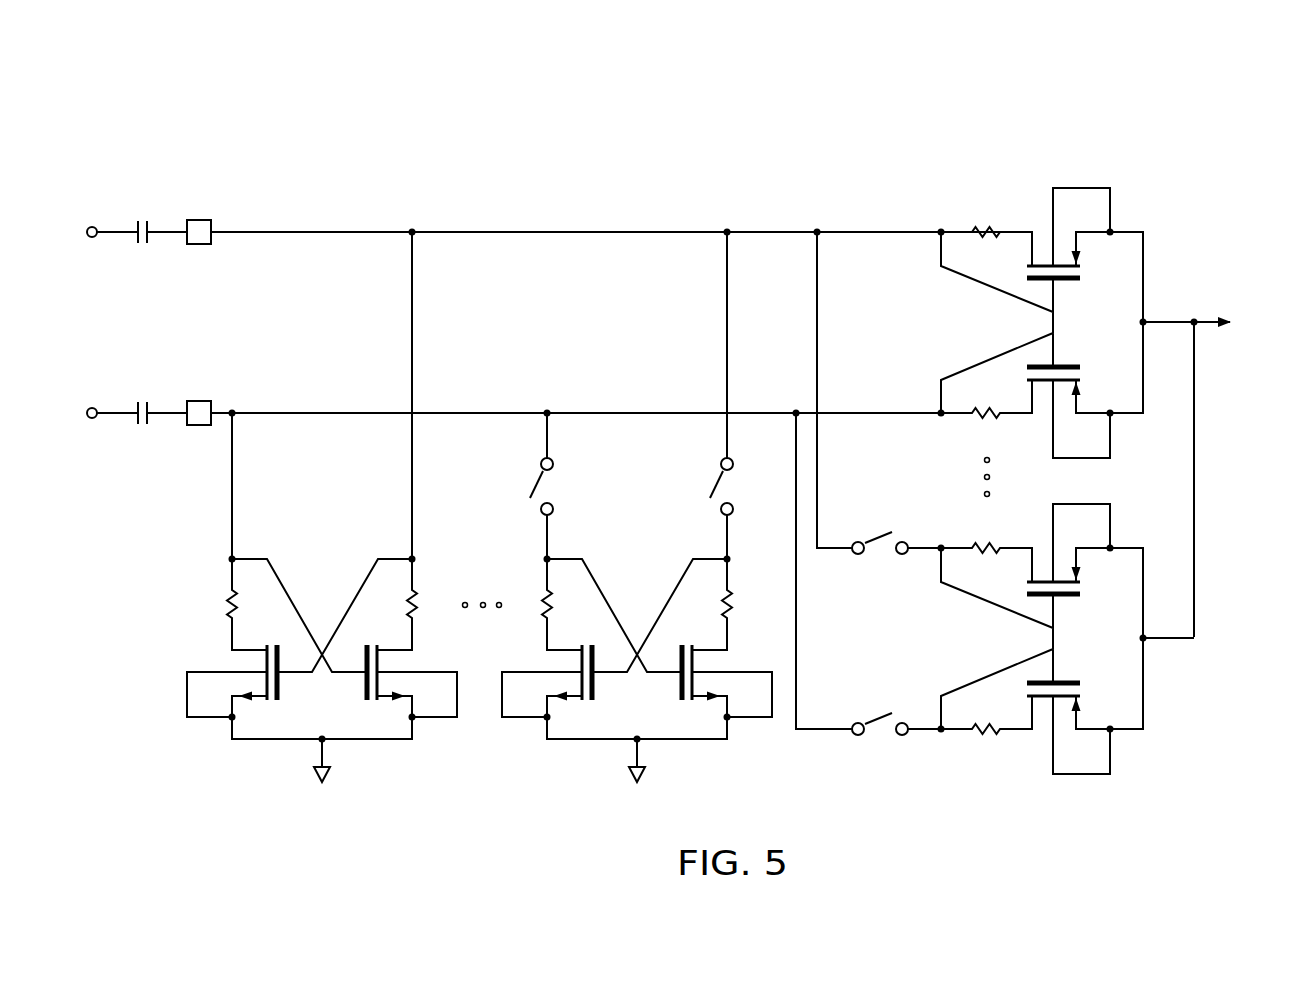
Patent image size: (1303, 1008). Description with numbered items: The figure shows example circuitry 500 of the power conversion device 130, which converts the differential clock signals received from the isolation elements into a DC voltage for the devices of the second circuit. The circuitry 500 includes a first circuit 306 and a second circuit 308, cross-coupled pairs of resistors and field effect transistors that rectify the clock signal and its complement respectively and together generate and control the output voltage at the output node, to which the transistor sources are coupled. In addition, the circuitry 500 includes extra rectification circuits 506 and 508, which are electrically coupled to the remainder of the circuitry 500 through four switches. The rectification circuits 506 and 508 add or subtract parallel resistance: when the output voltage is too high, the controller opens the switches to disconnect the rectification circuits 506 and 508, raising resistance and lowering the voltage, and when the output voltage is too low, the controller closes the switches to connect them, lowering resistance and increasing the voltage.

The circuitry 500 is at (278, 130).
The power conversion device 130 is at (1025, 167).
The first circuit 306 is at (1145, 197).
The second circuit 308 is at (275, 757).
The rectification circuit 508 is at (693, 753).
The rectification circuit 506 is at (1145, 763).